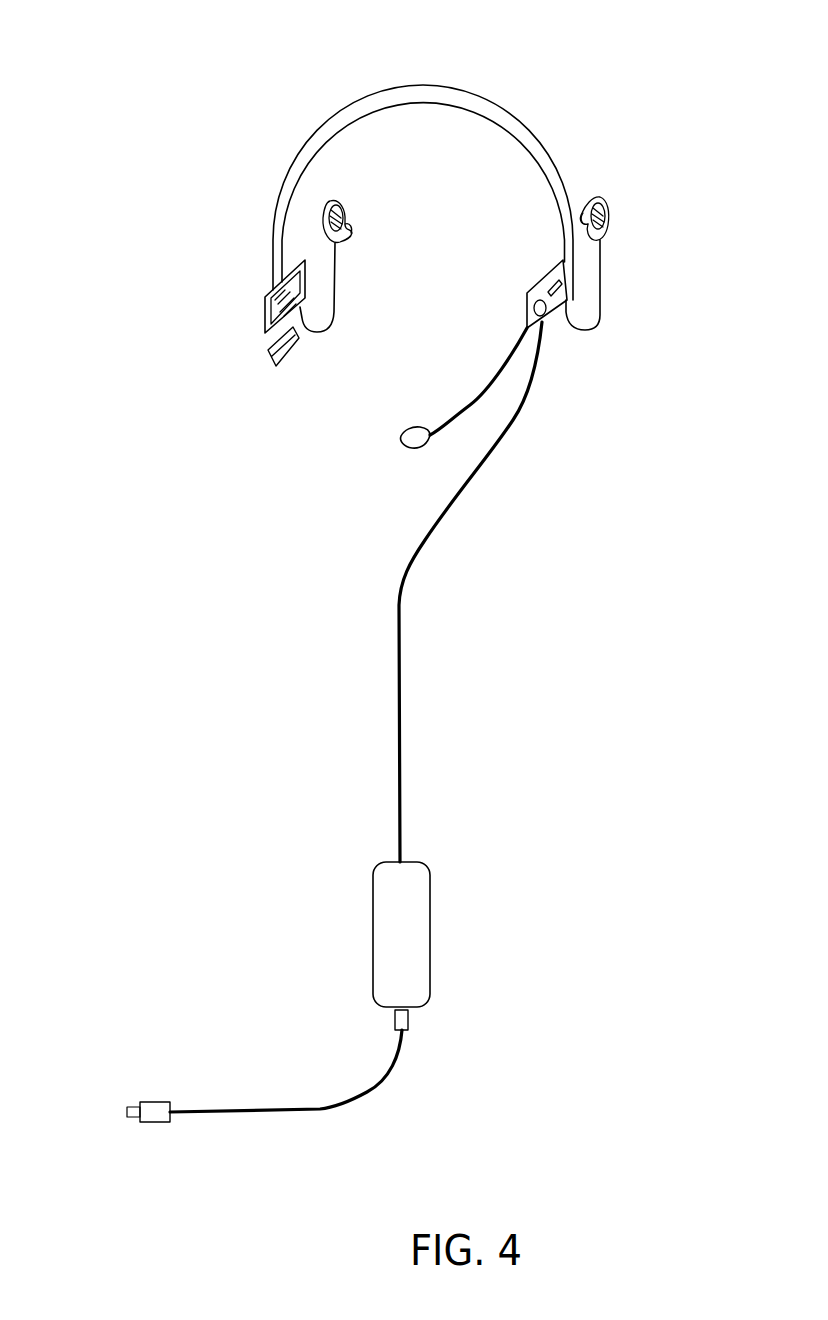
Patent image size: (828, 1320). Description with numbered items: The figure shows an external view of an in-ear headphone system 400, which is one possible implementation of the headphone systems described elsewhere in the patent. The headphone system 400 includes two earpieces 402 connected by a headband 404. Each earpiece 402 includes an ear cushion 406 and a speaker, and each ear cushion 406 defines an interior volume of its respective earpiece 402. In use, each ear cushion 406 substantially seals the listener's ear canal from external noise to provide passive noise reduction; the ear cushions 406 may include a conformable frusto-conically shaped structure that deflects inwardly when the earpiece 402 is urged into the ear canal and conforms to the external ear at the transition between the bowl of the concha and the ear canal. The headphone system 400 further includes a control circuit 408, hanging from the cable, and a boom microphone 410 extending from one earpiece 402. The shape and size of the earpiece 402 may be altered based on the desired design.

The in-ear headphone system 400 is at (375, 578).
The earpiece 402 is at (341, 212).
The headband 404 is at (476, 100).
The ear cushion 406 is at (348, 225).
The control circuit 408 is at (430, 935).
The boom microphone 410 is at (412, 421).